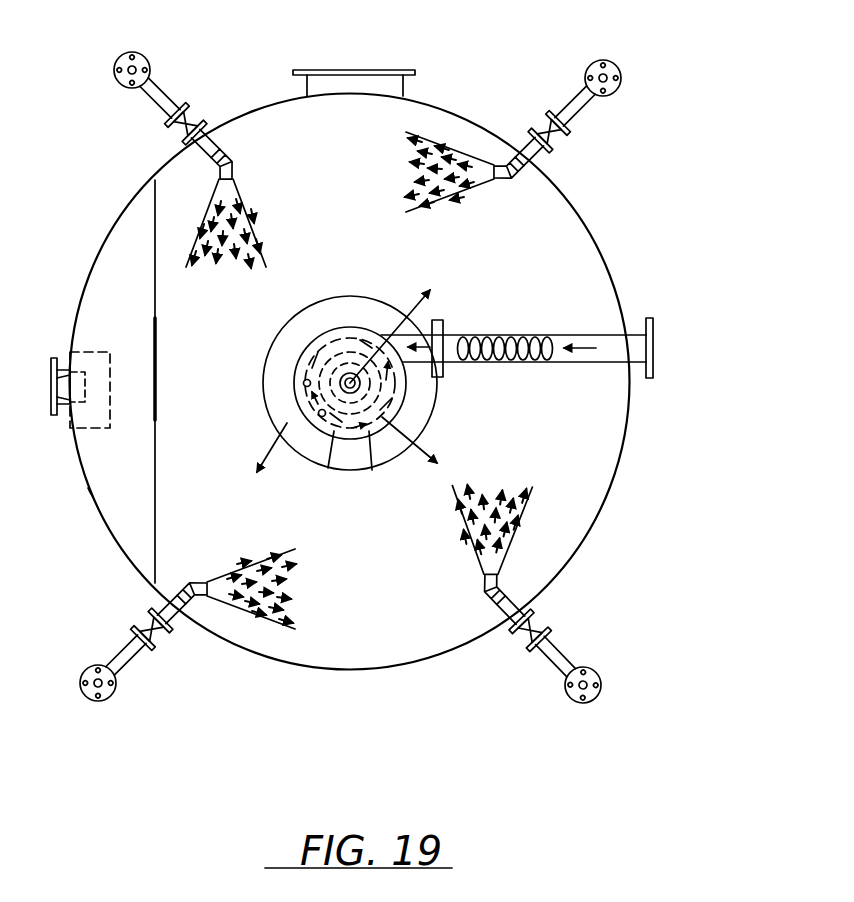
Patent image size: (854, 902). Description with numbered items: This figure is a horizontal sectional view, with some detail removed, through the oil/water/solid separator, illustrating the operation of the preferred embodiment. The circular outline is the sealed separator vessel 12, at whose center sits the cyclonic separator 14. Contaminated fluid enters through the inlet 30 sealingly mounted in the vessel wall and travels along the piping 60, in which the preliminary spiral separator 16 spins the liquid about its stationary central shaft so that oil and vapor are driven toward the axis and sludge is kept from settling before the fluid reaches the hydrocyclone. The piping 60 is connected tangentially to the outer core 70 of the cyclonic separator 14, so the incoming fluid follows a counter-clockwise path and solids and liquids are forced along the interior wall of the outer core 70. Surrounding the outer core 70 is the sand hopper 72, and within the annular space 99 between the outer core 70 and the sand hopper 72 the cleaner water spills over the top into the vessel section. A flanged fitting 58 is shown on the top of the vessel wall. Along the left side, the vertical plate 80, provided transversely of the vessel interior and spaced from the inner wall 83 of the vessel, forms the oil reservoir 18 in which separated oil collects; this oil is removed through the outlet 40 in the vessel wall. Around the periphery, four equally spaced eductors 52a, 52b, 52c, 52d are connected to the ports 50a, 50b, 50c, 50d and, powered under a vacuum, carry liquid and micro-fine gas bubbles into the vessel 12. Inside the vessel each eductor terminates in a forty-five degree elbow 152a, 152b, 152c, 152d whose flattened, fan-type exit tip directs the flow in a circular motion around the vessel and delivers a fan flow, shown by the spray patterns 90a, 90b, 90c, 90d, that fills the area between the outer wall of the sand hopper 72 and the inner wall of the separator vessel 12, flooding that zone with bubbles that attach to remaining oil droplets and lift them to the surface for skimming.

The separator vessel 12 is at (600, 236).
The cyclonic separator 14 is at (253, 356).
The preliminary spiral separator 16 is at (595, 320).
The oil reservoir 18 is at (122, 262).
The inlet 30 is at (655, 345).
The outlet 40 is at (53, 387).
The top flange 58 is at (357, 70).
The piping 60 is at (476, 338).
The outer core 70 is at (372, 438).
The sand hopper 72 is at (315, 343).
The vertical plate 80 is at (157, 452).
The inner wall 83 is at (93, 498).
The annular space 99 is at (318, 453).
The port 50a is at (546, 622).
The port 50b is at (140, 620).
The port 50c is at (194, 102).
The port 50d is at (563, 130).
The eductor 52a is at (565, 656).
The eductor 52b is at (127, 668).
The eductor 52c is at (152, 70).
The eductor 52d is at (572, 95).
The elbow 152a is at (492, 590).
The elbow 152b is at (193, 588).
The elbow 152c is at (236, 166).
The elbow 152d is at (512, 180).
The fan flow area 90a is at (516, 504).
The fan flow area 90b is at (302, 615).
The fan flow area 90c is at (197, 218).
The fan flow area 90d is at (396, 136).